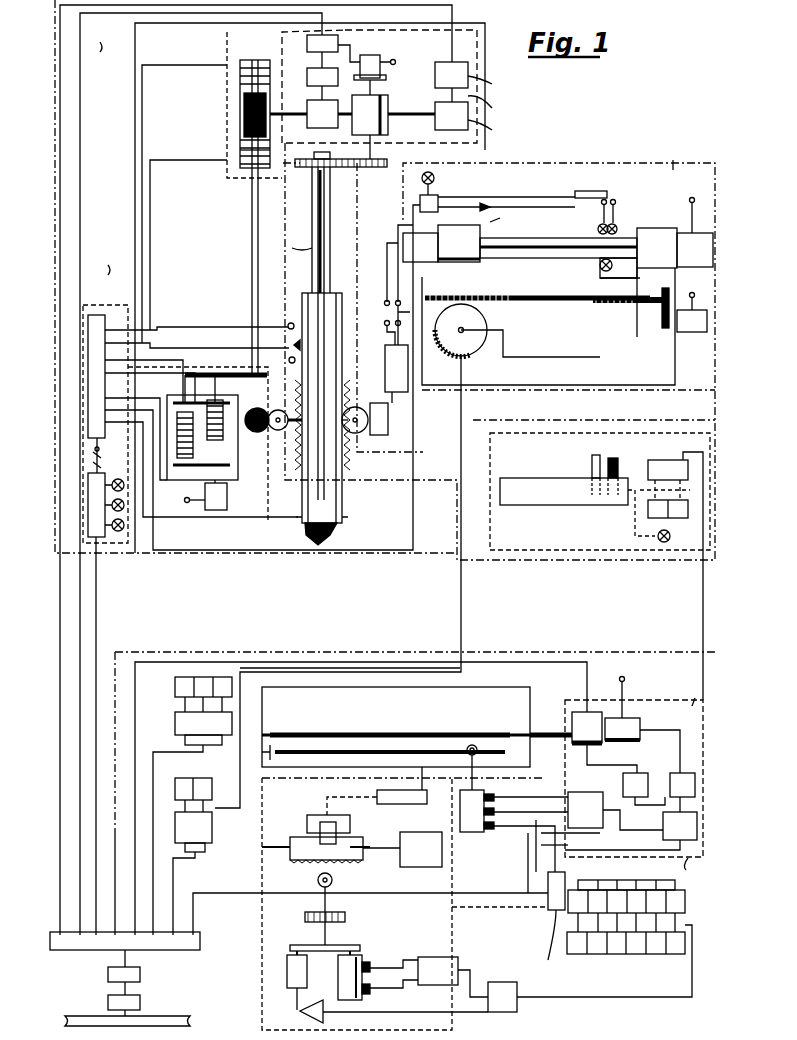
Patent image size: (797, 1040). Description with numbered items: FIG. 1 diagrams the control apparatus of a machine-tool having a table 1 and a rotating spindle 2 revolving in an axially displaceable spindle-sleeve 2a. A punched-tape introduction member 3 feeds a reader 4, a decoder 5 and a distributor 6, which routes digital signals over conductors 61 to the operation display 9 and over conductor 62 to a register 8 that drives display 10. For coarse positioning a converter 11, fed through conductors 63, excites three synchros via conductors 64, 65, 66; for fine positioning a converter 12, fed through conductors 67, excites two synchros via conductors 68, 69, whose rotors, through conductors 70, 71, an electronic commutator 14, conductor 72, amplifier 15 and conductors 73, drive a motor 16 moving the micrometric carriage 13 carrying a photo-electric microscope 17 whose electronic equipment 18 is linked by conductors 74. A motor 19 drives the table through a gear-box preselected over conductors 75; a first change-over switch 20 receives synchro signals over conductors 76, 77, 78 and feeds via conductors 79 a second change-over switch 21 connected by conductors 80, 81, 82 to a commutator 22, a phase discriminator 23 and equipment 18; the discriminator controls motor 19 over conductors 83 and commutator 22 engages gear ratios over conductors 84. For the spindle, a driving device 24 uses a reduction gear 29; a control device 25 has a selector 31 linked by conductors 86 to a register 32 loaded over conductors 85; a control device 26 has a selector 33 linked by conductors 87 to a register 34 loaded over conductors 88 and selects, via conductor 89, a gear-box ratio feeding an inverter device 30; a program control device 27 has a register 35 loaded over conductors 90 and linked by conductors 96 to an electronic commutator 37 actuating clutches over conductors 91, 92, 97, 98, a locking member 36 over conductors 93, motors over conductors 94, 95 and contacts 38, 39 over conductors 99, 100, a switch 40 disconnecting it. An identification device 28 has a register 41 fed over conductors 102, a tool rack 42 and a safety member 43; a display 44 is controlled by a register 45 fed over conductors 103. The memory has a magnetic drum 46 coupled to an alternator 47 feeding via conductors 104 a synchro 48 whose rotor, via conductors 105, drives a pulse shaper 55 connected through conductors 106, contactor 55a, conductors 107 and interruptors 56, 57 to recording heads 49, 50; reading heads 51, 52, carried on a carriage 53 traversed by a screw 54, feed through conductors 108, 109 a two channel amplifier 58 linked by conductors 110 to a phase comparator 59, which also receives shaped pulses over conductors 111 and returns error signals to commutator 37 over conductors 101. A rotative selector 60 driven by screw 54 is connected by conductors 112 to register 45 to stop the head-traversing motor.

The table 1 is at (385, 717).
The tool carrying spindle 2 is at (330, 276).
The spindle-sleeve 2a is at (322, 419).
The introduction member 3 is at (172, 1022).
The reader 4 is at (140, 1001).
The decoder 5 is at (140, 973).
The distributor 6 is at (198, 940).
The register 8 is at (680, 904).
The display 9 is at (176, 685).
The display 10 is at (672, 960).
The digital to analogue converter 11 is at (564, 865).
The digital to analogue converter 12 is at (590, 968).
The micrometric carriage 13 is at (352, 866).
The electronic commutator 14 is at (438, 971).
The electronic amplifier 15 is at (302, 1012).
The motor 16 is at (290, 990).
The photo-electric microscope 17 is at (385, 805).
The electronic equipment 18 is at (421, 849).
The motor 19 is at (622, 709).
The first change-over switch 20 is at (615, 811).
The second change-over switch 21 is at (680, 826).
The commutator 22 is at (644, 789).
The phase discriminator 23 is at (682, 792).
The driving device 24 is at (168, 512).
The control device 25 is at (480, 30).
The control device 26 is at (185, 92).
The control device 27 is at (125, 540).
The identification device 28 is at (600, 491).
The reduction gear 29 is at (185, 390).
The inverter device 30 is at (240, 116).
The selector 31 is at (487, 112).
The register 32 is at (486, 76).
The selector 33 is at (307, 74).
The register 34 is at (308, 44).
The register 35 is at (105, 537).
The locking member 36 is at (348, 518).
The electronic commutator 37 is at (98, 318).
The contact 38 is at (289, 360).
The contact 39 is at (288, 327).
The switch 40 is at (99, 452).
The register 41 is at (672, 462).
The rack 42 is at (577, 495).
The safety member 43 is at (670, 538).
The display 44 is at (190, 782).
The register 45 is at (208, 830).
The magnetic drum 46 is at (558, 237).
The alternator 47 is at (441, 248).
The synchro 48 is at (378, 436).
The magnetic recording head 49 is at (593, 228).
The magnetic recording head 50 is at (624, 223).
The reading head 51 is at (598, 280).
The reading head 52 is at (626, 268).
The carriage 53 is at (643, 330).
The screw 54 is at (528, 308).
The pulse shaper 55 is at (400, 392).
The contactor 55a is at (384, 318).
The interruptor 56 is at (597, 211).
The interruptor 57 is at (612, 202).
The two channel amplifier 58 is at (506, 200).
The phase comparator 59 is at (440, 183).
The rotative selector 60 is at (461, 330).
The electrical conductors 61 is at (157, 757).
The electrical conductor 62 is at (250, 892).
The electrical conductors 63 is at (544, 947).
The electrical conductors 64 is at (536, 790).
The electrical conductors 65 is at (548, 846).
The electrical conductors 66 is at (518, 862).
The electrical conductors 67 is at (630, 1000).
The electrical conductors 68 is at (472, 994).
The electrical conductors 69 is at (488, 1004).
The electrical conductors 70 is at (408, 968).
The electrical conductors 71 is at (410, 982).
The electrical conductor 72 is at (352, 1012).
The electrical conductors 73 is at (318, 995).
The electrical conductors 74 is at (372, 848).
The electrical conductors 75 is at (140, 662).
The electrical conductors 76 is at (562, 790).
The electrical conductors 77 is at (547, 747).
The electrical conductors 78 is at (593, 773).
The electrical conductors 79 is at (615, 800).
The electrical conductors 80 is at (655, 786).
The electrical conductors 81 is at (700, 790).
The electrical conductors 82 is at (620, 850).
The electrical conductors 83 is at (682, 734).
The electrical conductors 84 is at (625, 766).
The electrical conductors 85 is at (452, 42).
The electrical conductors 86 is at (490, 106).
The electrical conductors 87 is at (348, 52).
The electrical conductors 88 is at (50, 738).
The line 89 is at (318, 94).
The electrical conductors 90 is at (97, 636).
The electrical conductors 91 is at (144, 381).
The electrical conductors 92 is at (150, 387).
The electrical conductors 93 is at (282, 520).
The electrical conductors 94 is at (172, 520).
The electrical conductors 95 is at (155, 30).
The electrical conductors 96 is at (100, 470).
The electrical conductors 97 is at (142, 86).
The electrical conductors 98 is at (200, 167).
The electrical conductors 99 is at (198, 351).
The electrical conductors 100 is at (213, 330).
The electrical conductors 101 is at (412, 526).
The electrical conductors 102 is at (212, 654).
The electrical conductors 103 is at (173, 884).
The electrical conductors 104 is at (385, 384).
The electrical conductors 105 is at (388, 418).
The electrical conductors 106 is at (387, 334).
The electrical conductors 107 is at (396, 230).
The electrical conductors 108 is at (509, 225).
The electrical conductors 109 is at (559, 208).
The electrical conductors 110 is at (478, 196).
The electrical conductors 111 is at (413, 208).
The electrical conductors 112 is at (355, 582).